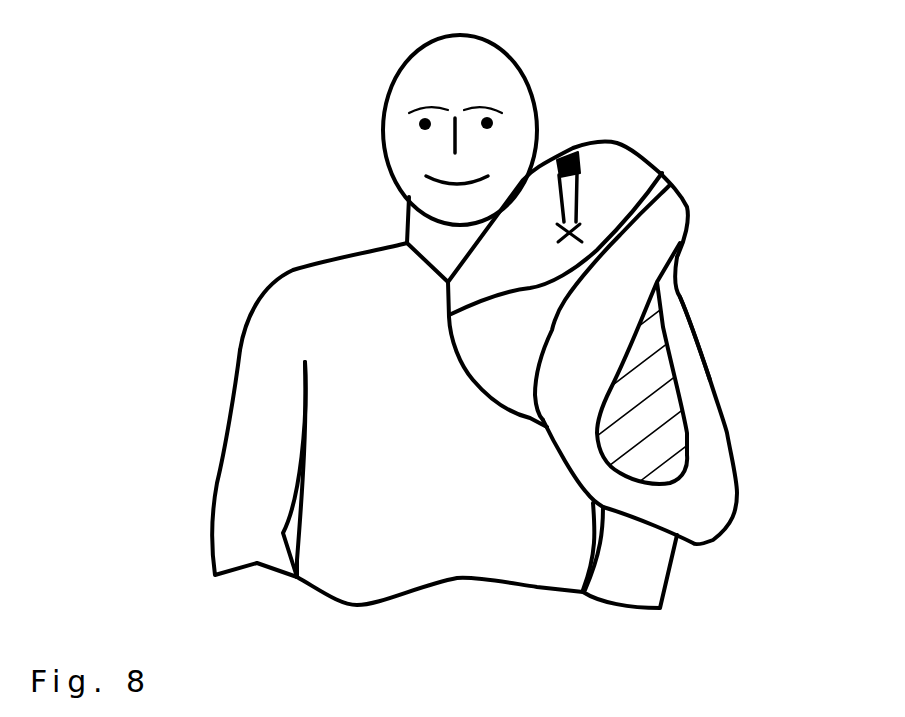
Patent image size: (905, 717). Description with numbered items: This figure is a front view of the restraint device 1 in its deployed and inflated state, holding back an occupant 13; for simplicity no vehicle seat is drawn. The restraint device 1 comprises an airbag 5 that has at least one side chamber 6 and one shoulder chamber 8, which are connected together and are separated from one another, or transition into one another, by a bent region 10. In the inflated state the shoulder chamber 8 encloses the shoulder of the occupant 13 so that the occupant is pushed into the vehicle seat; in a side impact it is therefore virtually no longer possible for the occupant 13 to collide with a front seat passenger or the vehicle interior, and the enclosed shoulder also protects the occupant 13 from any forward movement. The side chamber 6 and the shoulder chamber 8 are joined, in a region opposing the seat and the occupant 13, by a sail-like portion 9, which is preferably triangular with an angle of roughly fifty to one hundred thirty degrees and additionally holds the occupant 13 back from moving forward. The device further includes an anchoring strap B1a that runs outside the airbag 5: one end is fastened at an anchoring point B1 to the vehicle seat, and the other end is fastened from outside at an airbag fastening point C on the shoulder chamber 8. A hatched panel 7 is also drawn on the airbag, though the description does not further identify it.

The restraint device 1 is at (640, 296).
The airbag 5 is at (760, 330).
The side chamber 6 is at (697, 508).
The hook-and-loop panel 7 is at (647, 377).
The shoulder chamber 8 is at (477, 278).
The sail-like portion 9 is at (516, 361).
The bent region 10 is at (632, 207).
The occupant 13 is at (452, 492).
The anchoring point B1 is at (629, 129).
The anchoring strap B1a is at (570, 200).
The airbag fastening point C is at (578, 148).